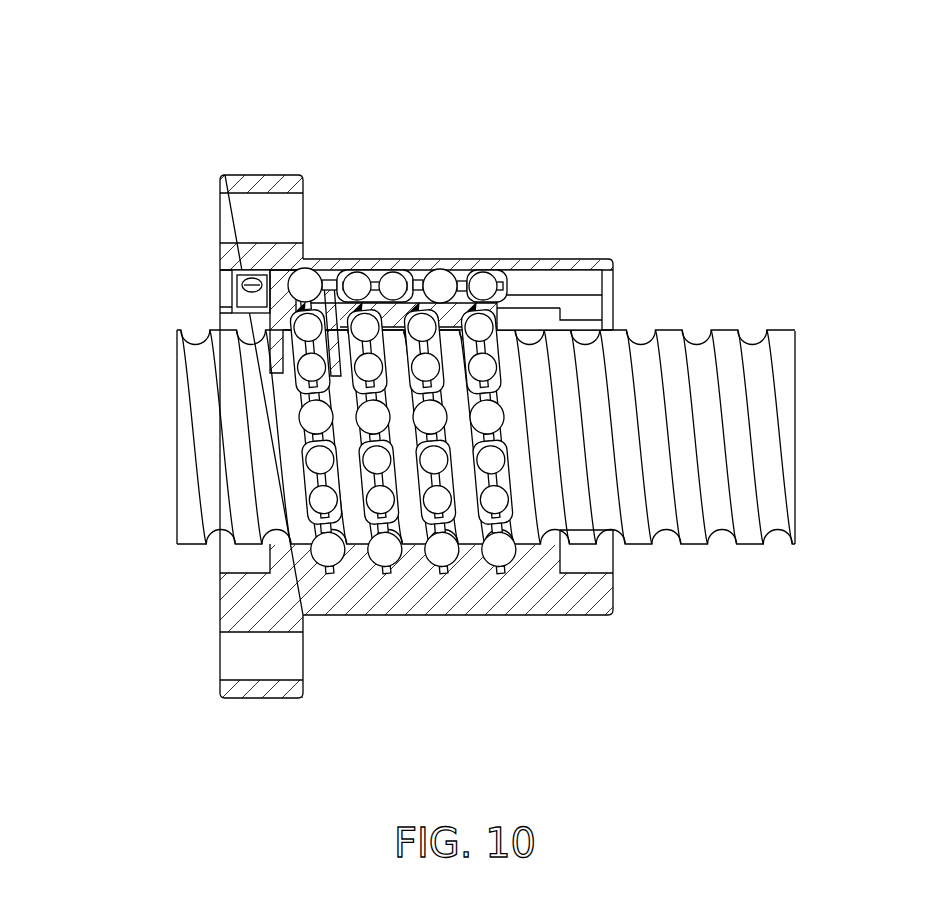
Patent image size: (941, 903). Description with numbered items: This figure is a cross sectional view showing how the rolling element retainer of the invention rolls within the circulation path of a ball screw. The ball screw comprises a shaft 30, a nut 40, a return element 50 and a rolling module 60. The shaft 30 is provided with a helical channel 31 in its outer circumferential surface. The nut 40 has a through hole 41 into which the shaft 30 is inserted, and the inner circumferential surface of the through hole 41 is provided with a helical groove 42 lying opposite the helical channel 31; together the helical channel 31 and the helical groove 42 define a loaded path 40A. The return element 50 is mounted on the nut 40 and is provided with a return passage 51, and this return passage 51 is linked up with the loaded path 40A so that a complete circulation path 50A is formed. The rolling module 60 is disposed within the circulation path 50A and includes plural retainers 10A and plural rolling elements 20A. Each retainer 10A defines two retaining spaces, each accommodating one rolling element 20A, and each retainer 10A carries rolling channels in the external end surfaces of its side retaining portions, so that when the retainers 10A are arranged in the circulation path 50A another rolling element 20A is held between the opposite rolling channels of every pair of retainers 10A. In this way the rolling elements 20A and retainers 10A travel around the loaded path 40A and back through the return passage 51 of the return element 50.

The retainer 10A is at (377, 275).
The rolling element 20A is at (308, 283).
The shaft 30 is at (550, 343).
The helical channel 31 is at (700, 340).
The nut 40 is at (402, 423).
The loaded path 40A is at (516, 202).
The through hole 41 is at (230, 557).
The helical groove 42 is at (492, 317).
The return element 50 is at (214, 281).
The circulation path 50A is at (363, 191).
The return passage 51 is at (288, 306).
The rolling module 60 is at (306, 291).